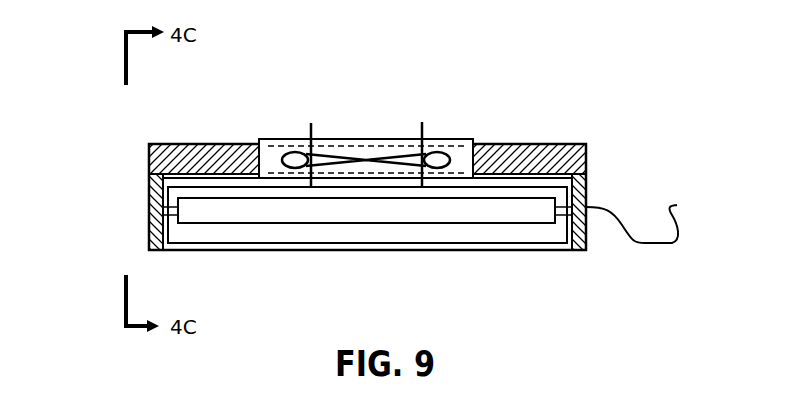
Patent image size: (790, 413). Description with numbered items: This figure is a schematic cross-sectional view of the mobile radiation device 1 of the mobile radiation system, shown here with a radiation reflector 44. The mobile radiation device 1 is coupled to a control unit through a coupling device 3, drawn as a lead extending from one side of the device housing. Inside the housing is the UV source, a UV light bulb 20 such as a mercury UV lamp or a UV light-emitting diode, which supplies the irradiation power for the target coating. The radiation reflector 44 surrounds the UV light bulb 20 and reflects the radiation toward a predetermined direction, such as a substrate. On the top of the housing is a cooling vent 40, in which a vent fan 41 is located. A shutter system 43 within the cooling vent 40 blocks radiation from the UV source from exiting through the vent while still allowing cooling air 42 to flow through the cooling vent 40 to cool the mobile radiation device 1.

The mobile radiation device 1 is at (96, 190).
The coupling device 3 is at (640, 222).
The UV light bulb 20 is at (250, 224).
The cooling vent 40 is at (258, 145).
The vent fan 41 is at (398, 142).
The cooling air 42 is at (313, 123).
The shutter system 43 is at (443, 140).
The radiation reflector 44 is at (455, 251).